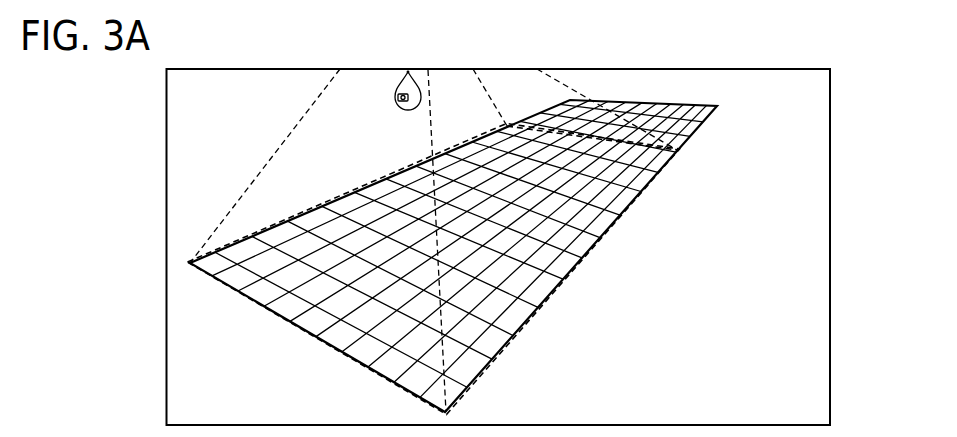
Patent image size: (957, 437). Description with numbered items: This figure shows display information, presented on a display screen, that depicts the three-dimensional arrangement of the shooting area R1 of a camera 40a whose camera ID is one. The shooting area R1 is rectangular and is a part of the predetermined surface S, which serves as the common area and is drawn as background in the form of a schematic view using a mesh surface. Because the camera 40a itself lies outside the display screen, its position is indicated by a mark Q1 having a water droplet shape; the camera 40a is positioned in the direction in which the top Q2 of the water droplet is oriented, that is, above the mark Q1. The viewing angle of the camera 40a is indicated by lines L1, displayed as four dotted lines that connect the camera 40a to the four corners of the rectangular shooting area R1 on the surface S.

The camera 40a is at (392, 76).
The top of the water droplet Q2 is at (408, 72).
The mark Q1 is at (430, 69).
The lines L1 is at (571, 89).
The surface S is at (668, 108).
The shooting area R1 is at (337, 341).